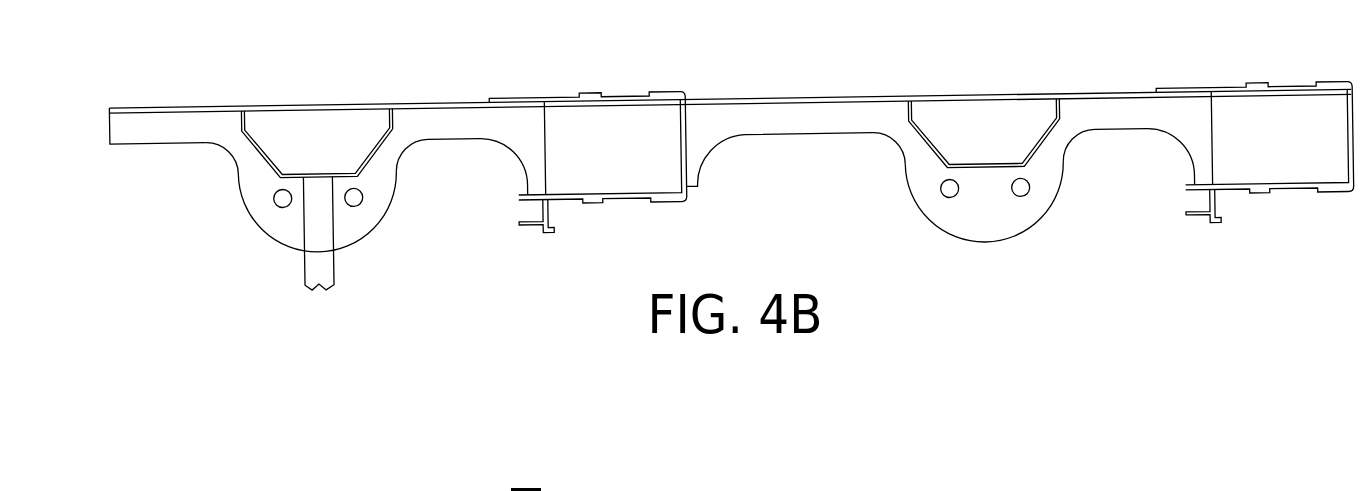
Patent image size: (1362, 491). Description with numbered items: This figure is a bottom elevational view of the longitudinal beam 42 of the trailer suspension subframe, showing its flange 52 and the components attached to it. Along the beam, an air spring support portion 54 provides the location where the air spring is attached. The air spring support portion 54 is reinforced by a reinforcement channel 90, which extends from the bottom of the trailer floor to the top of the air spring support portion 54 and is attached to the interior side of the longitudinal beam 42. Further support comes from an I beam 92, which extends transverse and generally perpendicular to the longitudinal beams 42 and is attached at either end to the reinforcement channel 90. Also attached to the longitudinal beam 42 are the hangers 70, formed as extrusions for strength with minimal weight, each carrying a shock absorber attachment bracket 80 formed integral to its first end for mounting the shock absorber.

The longitudinal beam 42 is at (179, 152).
The flange 52 is at (801, 141).
The air spring support portion 54 is at (368, 228).
The hanger 70 is at (588, 91).
The shock absorber attachment bracket 80 is at (527, 231).
The reinforcement channel 90 is at (372, 150).
The I beam 92 is at (317, 250).